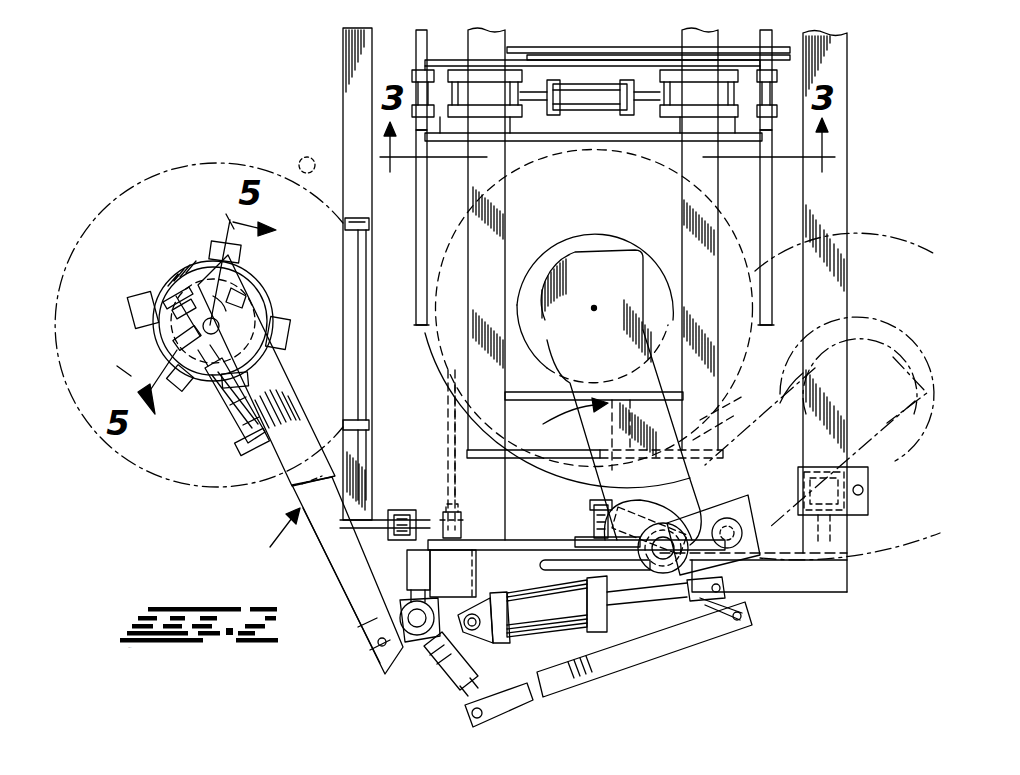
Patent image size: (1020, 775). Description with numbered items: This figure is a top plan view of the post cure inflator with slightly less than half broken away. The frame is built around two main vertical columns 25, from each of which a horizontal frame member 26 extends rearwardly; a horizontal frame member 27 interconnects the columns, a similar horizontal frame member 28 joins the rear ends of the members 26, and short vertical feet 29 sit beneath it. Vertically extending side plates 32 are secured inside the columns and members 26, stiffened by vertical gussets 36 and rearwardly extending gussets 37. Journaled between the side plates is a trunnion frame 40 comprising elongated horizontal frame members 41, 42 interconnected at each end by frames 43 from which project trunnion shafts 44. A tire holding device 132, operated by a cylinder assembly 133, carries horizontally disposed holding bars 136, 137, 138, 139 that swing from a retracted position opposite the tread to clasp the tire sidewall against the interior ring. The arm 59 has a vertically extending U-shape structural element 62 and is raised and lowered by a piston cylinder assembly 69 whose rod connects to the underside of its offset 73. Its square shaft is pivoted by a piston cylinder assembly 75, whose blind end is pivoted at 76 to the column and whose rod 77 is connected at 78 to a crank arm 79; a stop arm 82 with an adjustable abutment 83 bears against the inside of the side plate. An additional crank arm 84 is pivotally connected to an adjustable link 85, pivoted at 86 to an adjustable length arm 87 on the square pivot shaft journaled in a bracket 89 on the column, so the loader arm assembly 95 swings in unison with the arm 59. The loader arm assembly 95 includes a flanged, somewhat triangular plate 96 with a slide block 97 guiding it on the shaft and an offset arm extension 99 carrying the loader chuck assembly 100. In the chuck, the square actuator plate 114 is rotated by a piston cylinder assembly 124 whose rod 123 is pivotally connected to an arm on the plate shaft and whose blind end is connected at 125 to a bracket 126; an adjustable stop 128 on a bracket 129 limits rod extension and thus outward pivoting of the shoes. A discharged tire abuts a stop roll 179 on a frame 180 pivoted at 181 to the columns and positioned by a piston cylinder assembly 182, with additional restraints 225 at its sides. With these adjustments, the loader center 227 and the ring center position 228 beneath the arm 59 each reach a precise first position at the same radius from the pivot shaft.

The main vertical column 25 is at (467, 572).
The horizontal frame member 26 is at (810, 600).
The horizontal frame member 27 is at (445, 383).
The horizontal frame member 28 is at (840, 172).
The vertical feet 29 is at (850, 526).
The side plate 32 is at (495, 547).
The gusset 36 is at (446, 467).
The gusset 37 is at (845, 565).
The trunnion frame 40 is at (668, 42).
The horizontal frame member 41 is at (497, 225).
The horizontal frame member 42 is at (680, 222).
The frame 43 is at (515, 458).
The trunnion shaft 44 is at (585, 542).
The arm 59 is at (561, 417).
The U-shape structural element 62 is at (688, 470).
The piston cylinder assembly 69 is at (748, 520).
The offset 73 is at (735, 510).
The piston cylinder assembly 75 is at (560, 632).
The pivot 76 is at (478, 636).
The rod 77 is at (645, 602).
The connection 78 is at (725, 596).
The crank arm 79 is at (700, 573).
The stop arm 82 is at (636, 505).
The adjustable abutment 83 is at (594, 515).
The crank arm 84 is at (698, 600).
The adjustable link 85 is at (615, 676).
The pivot 86 is at (468, 718).
The adjustable length arm 87 is at (447, 672).
The bracket 89 is at (410, 563).
The loader arm assembly 95 is at (272, 536).
The plate 96 is at (342, 580).
The slide block 97 is at (406, 652).
The arm extension 99 is at (297, 407).
The loader chuck assembly 100 is at (275, 290).
The actuator plate 114 is at (271, 304).
The rod 123 is at (208, 402).
The piston cylinder assembly 124 is at (224, 414).
The connection 125 is at (246, 441).
The bracket 126 is at (269, 442).
The adjustable stop 128 is at (175, 348).
The bracket 129 is at (183, 299).
The tire holding device 132 is at (572, 44).
The cylinder assembly 133 is at (590, 110).
The holding bar 136 is at (420, 52).
The holding bar 137 is at (764, 50).
The holding bar 138 is at (430, 200).
The holding bar 139 is at (762, 200).
The stop roll 179 is at (368, 352).
The frame 180 is at (365, 446).
The pivot 181 is at (460, 515).
The piston cylinder assembly 182 is at (393, 512).
The additional restraint 225 is at (311, 158).
The center of the loader 227 is at (243, 294).
The predetermined position 228 is at (596, 306).